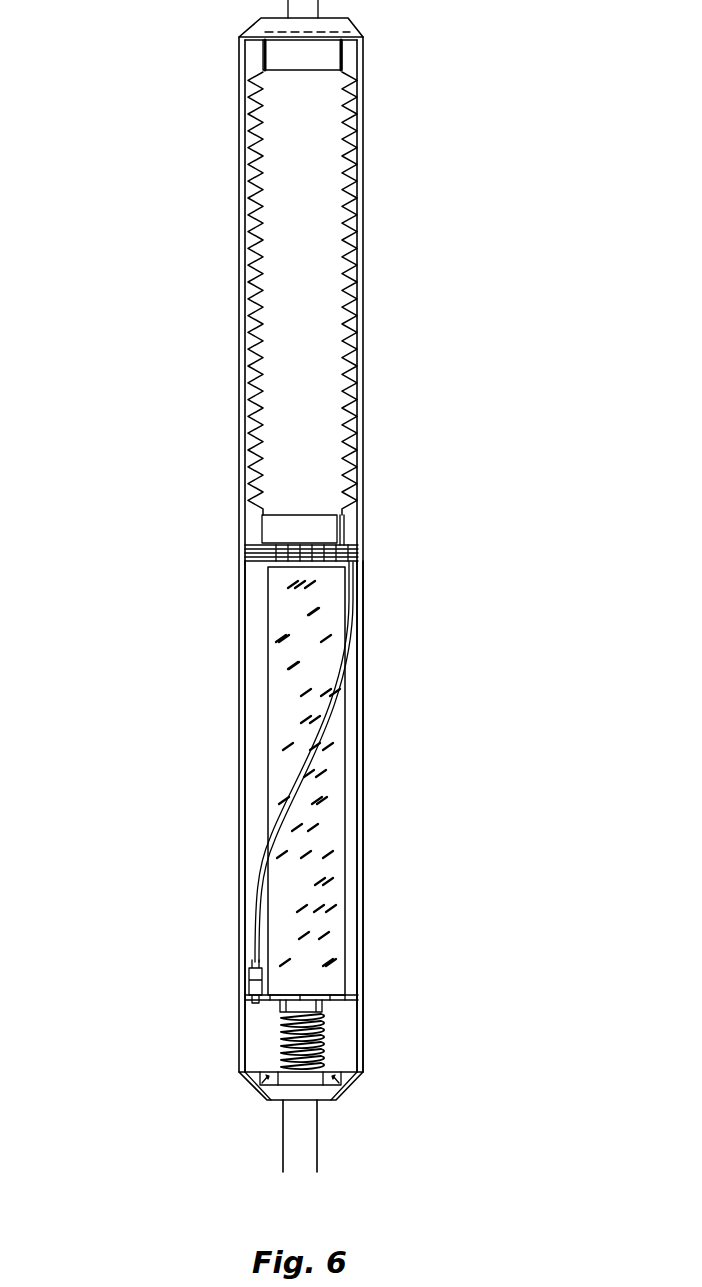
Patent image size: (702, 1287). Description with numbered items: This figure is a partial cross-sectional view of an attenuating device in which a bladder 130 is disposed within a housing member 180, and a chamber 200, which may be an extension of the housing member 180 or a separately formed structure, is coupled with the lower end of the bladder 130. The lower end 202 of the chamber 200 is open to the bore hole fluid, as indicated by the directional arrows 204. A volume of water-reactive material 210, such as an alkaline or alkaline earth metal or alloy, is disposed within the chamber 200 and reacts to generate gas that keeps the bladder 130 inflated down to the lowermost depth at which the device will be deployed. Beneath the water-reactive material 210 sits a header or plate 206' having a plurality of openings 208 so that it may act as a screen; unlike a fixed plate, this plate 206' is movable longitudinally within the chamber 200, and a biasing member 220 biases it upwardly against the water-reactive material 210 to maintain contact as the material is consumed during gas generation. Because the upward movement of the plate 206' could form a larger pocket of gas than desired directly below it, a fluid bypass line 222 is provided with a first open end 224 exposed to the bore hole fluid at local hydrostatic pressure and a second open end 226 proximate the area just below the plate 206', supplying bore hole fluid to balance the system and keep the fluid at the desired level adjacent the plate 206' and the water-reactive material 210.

The bladder 130 is at (365, 87).
The housing member 180 is at (365, 298).
The first open end 224 is at (350, 537).
The chamber 200 is at (365, 650).
The water-reactive material 210 is at (343, 753).
The fluid bypass line 222 is at (350, 678).
The second open end 226 is at (250, 1005).
The openings 208 is at (353, 1010).
The header or plate 206' is at (398, 949).
The biasing member 220 is at (318, 1040).
The lower end 202 is at (258, 1107).
The directional arrows 204 is at (250, 1085).